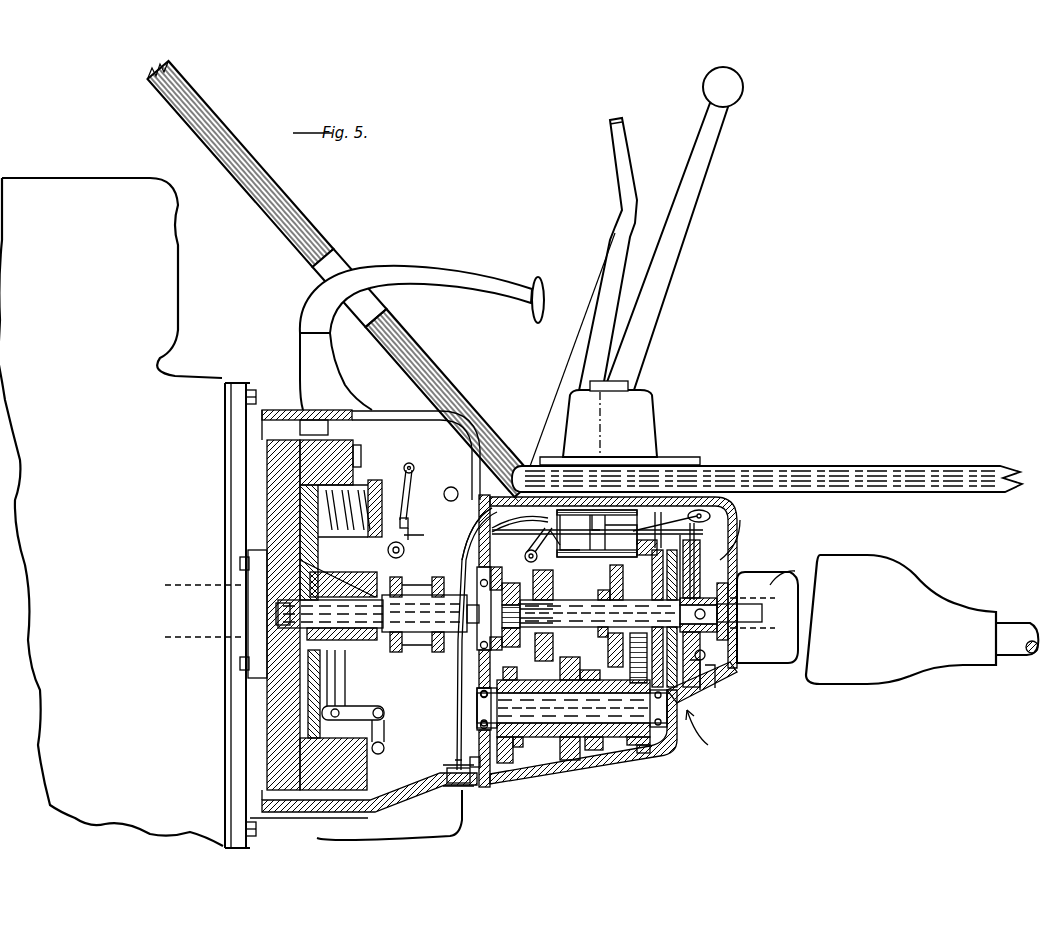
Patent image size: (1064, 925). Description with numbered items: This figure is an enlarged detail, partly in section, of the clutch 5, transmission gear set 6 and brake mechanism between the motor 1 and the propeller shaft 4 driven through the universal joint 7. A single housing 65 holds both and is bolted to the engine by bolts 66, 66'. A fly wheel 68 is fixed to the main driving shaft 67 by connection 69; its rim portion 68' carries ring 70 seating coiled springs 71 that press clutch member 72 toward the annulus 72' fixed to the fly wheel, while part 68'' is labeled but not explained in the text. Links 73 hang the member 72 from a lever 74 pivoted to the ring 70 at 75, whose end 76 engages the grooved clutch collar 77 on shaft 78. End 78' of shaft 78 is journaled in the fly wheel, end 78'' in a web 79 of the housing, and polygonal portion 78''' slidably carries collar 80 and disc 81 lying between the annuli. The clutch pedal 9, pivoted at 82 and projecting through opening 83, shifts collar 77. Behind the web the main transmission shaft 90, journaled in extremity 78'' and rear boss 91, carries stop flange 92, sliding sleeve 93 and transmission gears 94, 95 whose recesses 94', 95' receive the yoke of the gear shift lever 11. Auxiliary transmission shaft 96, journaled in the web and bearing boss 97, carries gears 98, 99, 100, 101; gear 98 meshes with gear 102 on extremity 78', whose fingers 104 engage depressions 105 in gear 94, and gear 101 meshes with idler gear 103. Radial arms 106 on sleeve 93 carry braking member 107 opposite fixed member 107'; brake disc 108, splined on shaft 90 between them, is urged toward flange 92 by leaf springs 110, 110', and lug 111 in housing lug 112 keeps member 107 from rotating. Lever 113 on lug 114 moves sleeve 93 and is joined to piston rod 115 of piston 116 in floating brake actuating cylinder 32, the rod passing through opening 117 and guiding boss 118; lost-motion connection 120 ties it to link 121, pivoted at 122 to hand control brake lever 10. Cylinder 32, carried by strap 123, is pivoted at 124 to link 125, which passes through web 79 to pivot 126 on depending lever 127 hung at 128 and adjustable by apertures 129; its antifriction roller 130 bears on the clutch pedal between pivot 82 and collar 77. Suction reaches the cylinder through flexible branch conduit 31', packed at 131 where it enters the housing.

The engine body 1 is at (70, 192).
The propeller shaft 4 is at (1015, 624).
The flywheel 5 is at (282, 735).
The gear box housing 6 is at (688, 722).
The universal joint housing 7 is at (905, 593).
The clutch pedal 9 is at (416, 266).
The gear shift lever 10 is at (615, 242).
The gear shift lever with knob 11 is at (700, 165).
The oil pipe 31' is at (389, 815).
The frame bar 32 is at (767, 479).
The casing bottom wall 65 is at (440, 780).
The bolt 66 is at (228, 372).
The bolt 66' is at (274, 831).
The axis line 67 is at (184, 585).
The flange plate 68 is at (228, 615).
The housing wall 68' is at (261, 561).
The brake lever 68'' is at (342, 281).
The nut 69 is at (241, 563).
The housing rim 70 is at (358, 417).
The pressure plate 71 is at (333, 455).
The clutch plate 72 is at (269, 574).
The engine plate 72' is at (204, 615).
The clutch rod 73 is at (345, 700).
The release lever 74 is at (386, 715).
The pivot 75 is at (386, 748).
The bearing cap 76 is at (435, 654).
The bearing sleeve 77 is at (420, 595).
The release rod 78 is at (458, 639).
The hub 78' is at (230, 614).
The release rod upper end 78'' is at (464, 543).
The clutch shaft 78''' is at (335, 595).
The partition wall 79 is at (495, 778).
The clutch springs hub 80 is at (340, 580).
The clutch hub 81 is at (305, 522).
The pivot pin 82 is at (470, 490).
The clutch housing cover 83 is at (415, 411).
The gear 90 is at (652, 606).
The coupling 91 is at (790, 580).
The housing end wall 92 is at (730, 560).
The coupling flange 93 is at (776, 573).
The gear 94 is at (549, 574).
The gear 94' is at (561, 646).
The gear 95 is at (597, 582).
The gear 95' is at (600, 647).
The countershaft gear 96 is at (600, 752).
The drain 97 is at (708, 737).
The countershaft gear 98 is at (520, 768).
The countershaft 99 is at (545, 772).
The countershaft gear 100 is at (570, 762).
The countershaft gear 101 is at (660, 757).
The bearing hub 102 is at (500, 585).
The gear cluster 103 is at (622, 745).
The bearing 104 is at (524, 618).
The main shaft 105 is at (600, 612).
The bearing support 106 is at (700, 560).
The shift arm 107 is at (701, 484).
The shift tower 107' is at (626, 443).
The pivot ball 108 is at (706, 513).
The sliding gear 110 is at (651, 618).
The sliding gear teeth 110' is at (641, 649).
The inclined wall 111 is at (692, 713).
The bearing bracket 112 is at (702, 698).
The shift pin 113 is at (740, 555).
The rear bearing 114 is at (738, 612).
The base plate 115 is at (690, 515).
The shift fork 116 is at (568, 520).
The shift fork 117 is at (620, 512).
The shift fork guide 118 is at (600, 510).
The shift rod 120 is at (680, 540).
The shift rod 121 is at (668, 530).
The bell crank 122 is at (524, 553).
The shift block 123 is at (590, 552).
The shift rail 124 is at (520, 500).
The link 125 is at (520, 522).
The pin 126 is at (449, 500).
The lever 127 is at (407, 465).
The pivot 128 is at (413, 458).
The pin 129 is at (410, 502).
The roller 130 is at (405, 548).
The nut 131 is at (460, 790).